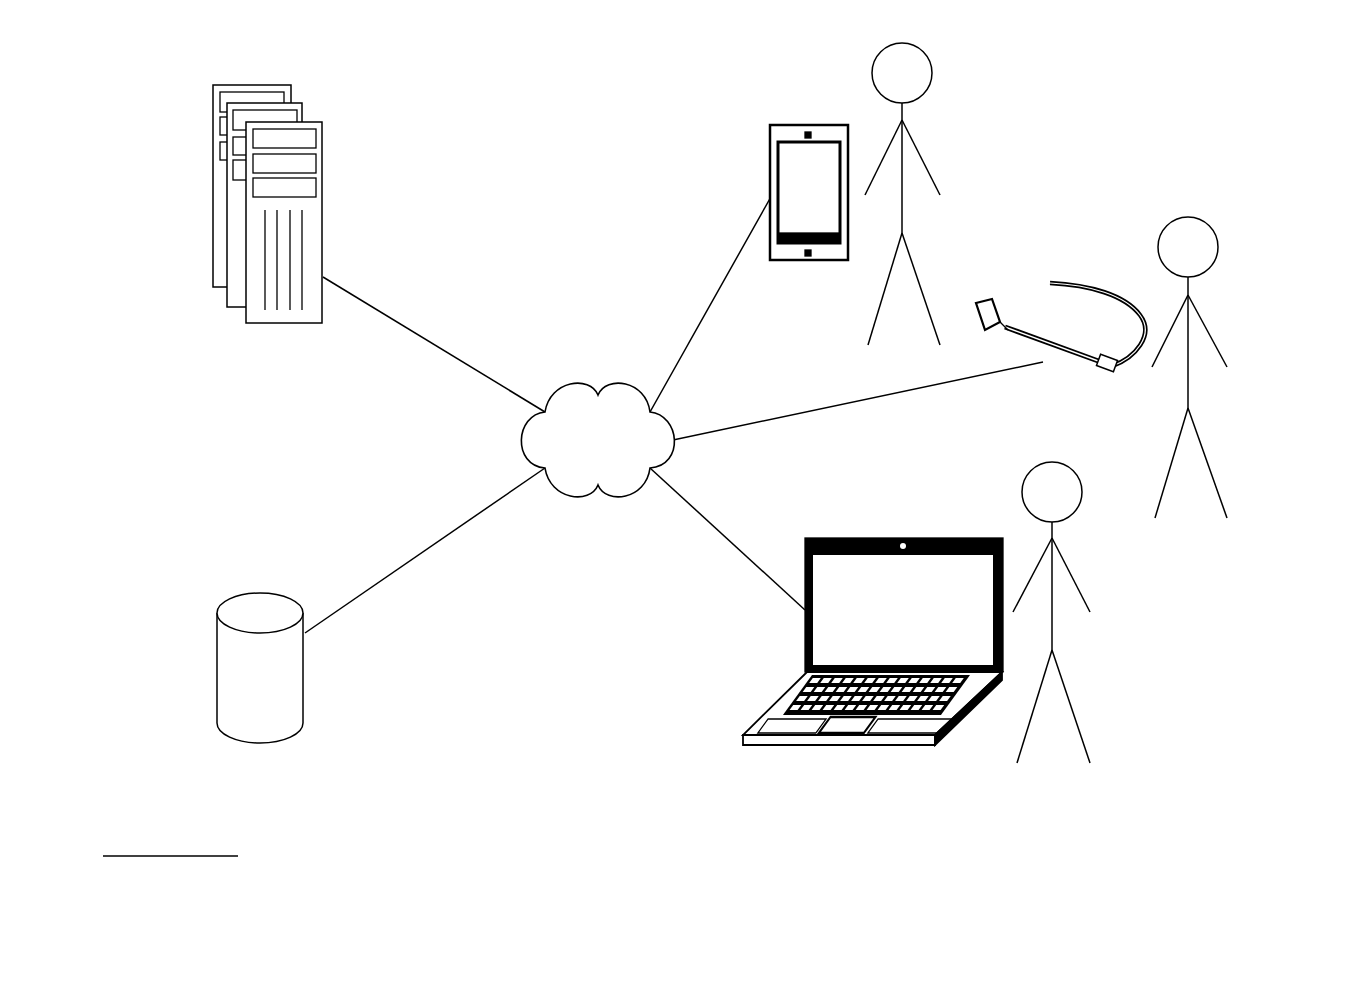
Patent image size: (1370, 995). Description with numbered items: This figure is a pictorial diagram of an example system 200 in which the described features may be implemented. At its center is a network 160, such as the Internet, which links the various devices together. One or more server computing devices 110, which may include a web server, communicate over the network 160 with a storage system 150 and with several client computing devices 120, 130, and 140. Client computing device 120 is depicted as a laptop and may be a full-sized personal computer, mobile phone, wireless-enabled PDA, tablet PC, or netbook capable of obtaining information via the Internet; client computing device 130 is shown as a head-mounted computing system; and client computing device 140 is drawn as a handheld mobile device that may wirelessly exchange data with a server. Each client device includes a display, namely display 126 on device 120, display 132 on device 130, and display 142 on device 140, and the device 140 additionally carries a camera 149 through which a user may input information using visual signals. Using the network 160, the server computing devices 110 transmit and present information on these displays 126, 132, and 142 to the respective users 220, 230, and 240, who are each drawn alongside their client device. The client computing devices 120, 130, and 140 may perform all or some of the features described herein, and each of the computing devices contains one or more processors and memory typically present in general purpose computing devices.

The server computing device 110 is at (323, 167).
The client computing device 120 is at (845, 641).
The display 126 is at (805, 650).
The client computing device 130 is at (1060, 323).
The display 132 is at (1107, 370).
The client computing device 140 is at (750, 145).
The display 142 is at (778, 210).
The phone camera 149 is at (802, 135).
The storage system 150 is at (305, 690).
The network 160 is at (674, 414).
The system 200 is at (192, 797).
The user 220 is at (1082, 597).
The user 230 is at (1220, 353).
The user 240 is at (935, 182).